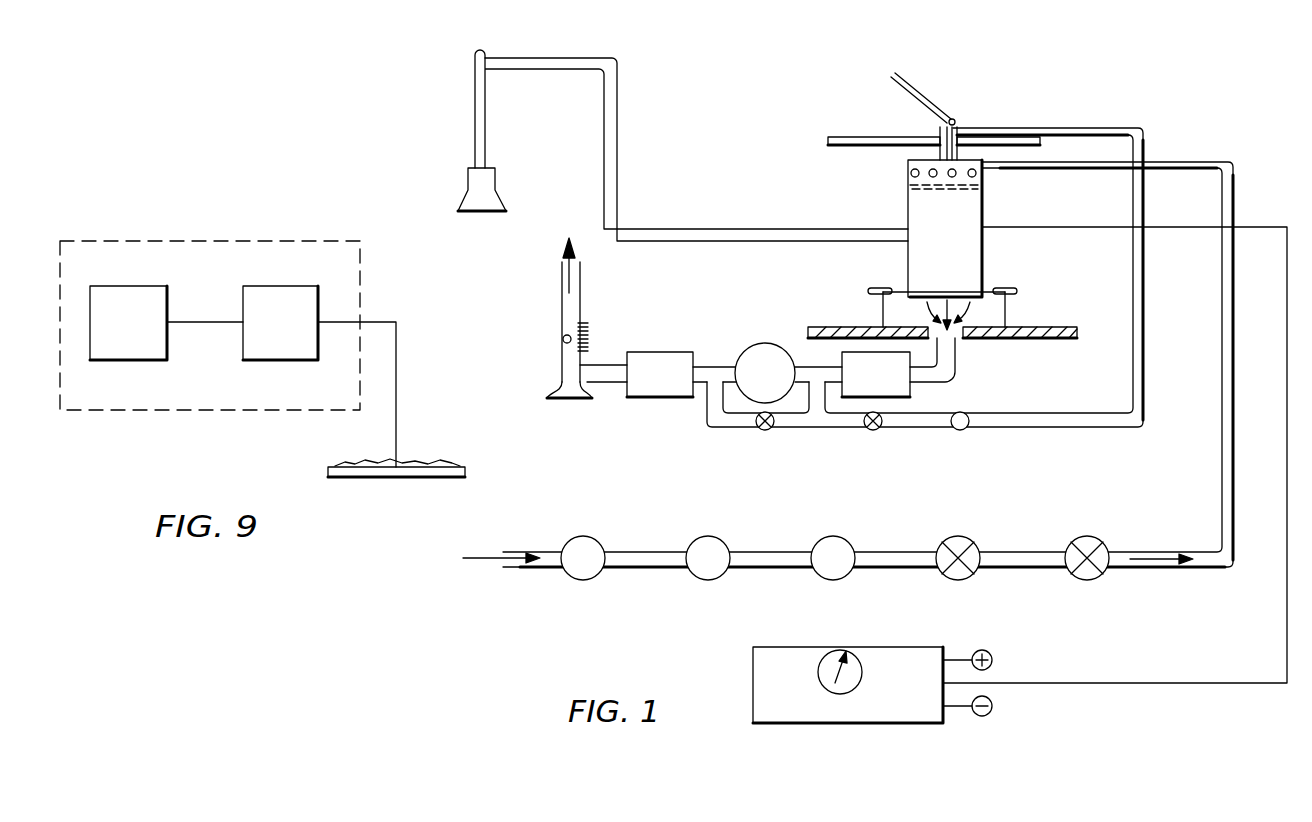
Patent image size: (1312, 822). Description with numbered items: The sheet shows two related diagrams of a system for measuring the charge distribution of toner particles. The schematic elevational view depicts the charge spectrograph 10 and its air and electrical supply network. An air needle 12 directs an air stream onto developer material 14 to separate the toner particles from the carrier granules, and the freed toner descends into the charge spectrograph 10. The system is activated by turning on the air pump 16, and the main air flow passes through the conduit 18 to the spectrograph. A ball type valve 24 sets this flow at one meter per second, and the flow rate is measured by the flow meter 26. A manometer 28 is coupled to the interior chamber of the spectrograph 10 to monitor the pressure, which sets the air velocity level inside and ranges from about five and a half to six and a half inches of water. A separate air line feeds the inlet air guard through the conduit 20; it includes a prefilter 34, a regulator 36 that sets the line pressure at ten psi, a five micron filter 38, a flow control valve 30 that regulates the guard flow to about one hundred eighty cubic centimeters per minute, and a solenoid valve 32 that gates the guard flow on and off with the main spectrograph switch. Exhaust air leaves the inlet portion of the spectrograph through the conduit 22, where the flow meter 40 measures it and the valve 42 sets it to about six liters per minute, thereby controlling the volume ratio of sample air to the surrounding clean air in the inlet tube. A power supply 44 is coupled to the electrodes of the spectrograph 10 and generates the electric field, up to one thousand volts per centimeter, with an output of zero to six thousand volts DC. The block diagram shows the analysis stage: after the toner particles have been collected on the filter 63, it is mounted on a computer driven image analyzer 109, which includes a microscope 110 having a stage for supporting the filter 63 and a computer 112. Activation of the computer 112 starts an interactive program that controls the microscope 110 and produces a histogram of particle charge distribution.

In FIG. 1, the charge spectrograph 10 is at (856, 187).
In FIG. 1, the air needle 12 is at (931, 92).
In FIG. 1, the developer material 14 is at (960, 118).
In FIG. 1, the air pump 16 is at (745, 355).
In FIG. 1, the conduit 18 is at (987, 372).
In FIG. 1, the conduit 20 is at (1265, 319).
In FIG. 1, the conduit 22 is at (1145, 210).
In FIG. 1, the valve 24 is at (768, 431).
In FIG. 1, the flow meter 26 is at (562, 357).
In FIG. 1, the manometer 28 is at (468, 178).
In FIG. 1, the valve 30 is at (978, 541).
In FIG. 1, the solenoid valve 32 is at (1105, 541).
In FIG. 1, the prefilter 34 is at (618, 532).
In FIG. 1, the regulator 36 is at (725, 541).
In FIG. 1, the filter 38 is at (848, 541).
In FIG. 1, the flow meter 40 is at (965, 431).
In FIG. 1, the valve 42 is at (875, 431).
In FIG. 1, the power supply 44 is at (757, 668).
In FIG. 9, the filter 63 is at (360, 472).
In FIG. 9, the image analyzer 109 is at (285, 203).
In FIG. 9, the microscope 110 is at (313, 293).
In FIG. 9, the computer 112 is at (153, 295).